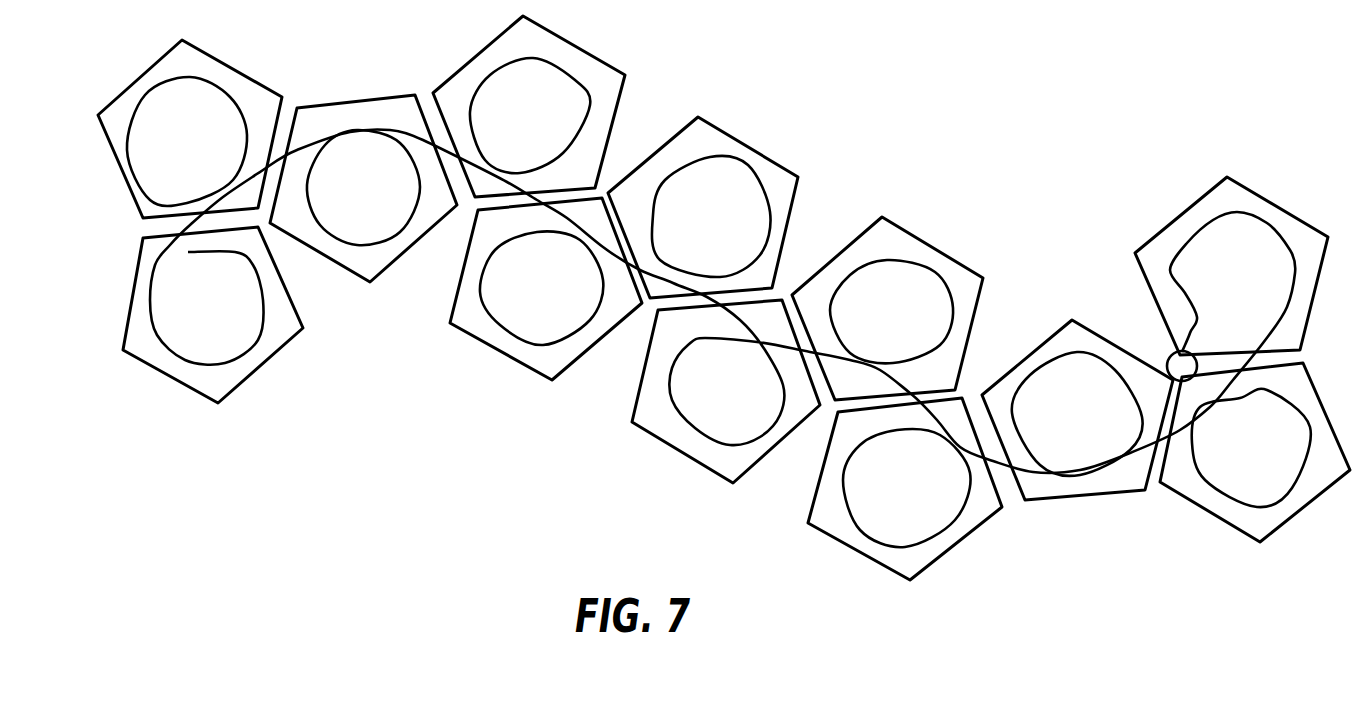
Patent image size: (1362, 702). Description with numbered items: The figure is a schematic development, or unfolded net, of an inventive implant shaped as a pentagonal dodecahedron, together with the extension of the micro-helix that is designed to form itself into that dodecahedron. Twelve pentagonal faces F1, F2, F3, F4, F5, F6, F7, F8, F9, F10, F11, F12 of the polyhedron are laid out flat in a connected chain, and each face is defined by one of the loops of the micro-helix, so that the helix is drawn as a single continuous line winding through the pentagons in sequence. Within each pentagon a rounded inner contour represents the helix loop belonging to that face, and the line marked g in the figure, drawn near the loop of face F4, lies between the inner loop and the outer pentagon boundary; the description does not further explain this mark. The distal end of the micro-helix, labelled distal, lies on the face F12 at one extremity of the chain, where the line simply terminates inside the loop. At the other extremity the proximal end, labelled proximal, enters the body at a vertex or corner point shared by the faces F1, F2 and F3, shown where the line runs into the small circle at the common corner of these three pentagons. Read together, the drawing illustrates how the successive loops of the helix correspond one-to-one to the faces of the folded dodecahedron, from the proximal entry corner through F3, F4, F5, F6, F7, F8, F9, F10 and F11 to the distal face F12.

The first face F1 is at (1231, 279).
The second face F2 is at (1255, 452).
The third face F3 is at (1077, 410).
The fourth face F4 is at (905, 489).
The fifth face F5 is at (887, 308).
The sixth face F6 is at (726, 391).
The seventh face F7 is at (703, 207).
The eighth face F8 is at (546, 289).
The ninth face F9 is at (529, 106).
The tenth face F10 is at (363, 188).
The eleventh face F11 is at (190, 129).
The twelfth face F12 is at (213, 315).
The gap between inner member and face g is at (933, 535).
The proximal end proximal is at (1150, 336).
The distal end distal is at (232, 273).